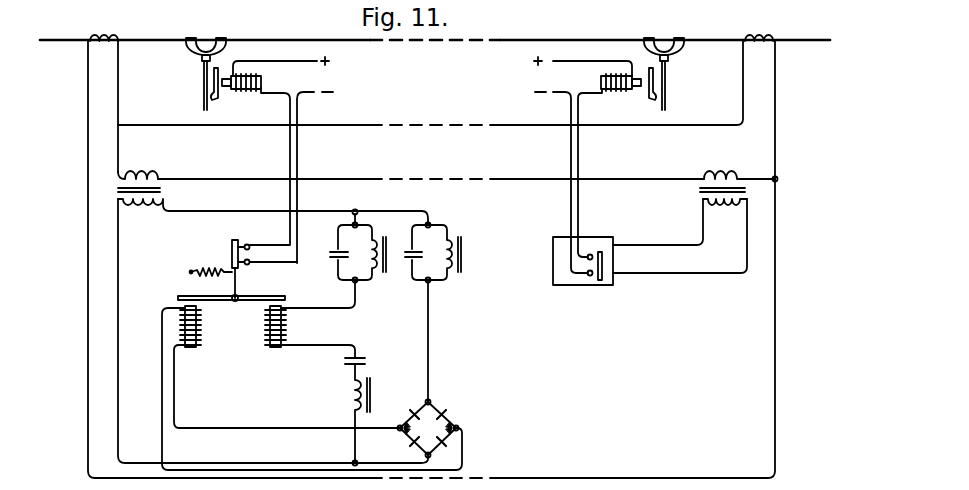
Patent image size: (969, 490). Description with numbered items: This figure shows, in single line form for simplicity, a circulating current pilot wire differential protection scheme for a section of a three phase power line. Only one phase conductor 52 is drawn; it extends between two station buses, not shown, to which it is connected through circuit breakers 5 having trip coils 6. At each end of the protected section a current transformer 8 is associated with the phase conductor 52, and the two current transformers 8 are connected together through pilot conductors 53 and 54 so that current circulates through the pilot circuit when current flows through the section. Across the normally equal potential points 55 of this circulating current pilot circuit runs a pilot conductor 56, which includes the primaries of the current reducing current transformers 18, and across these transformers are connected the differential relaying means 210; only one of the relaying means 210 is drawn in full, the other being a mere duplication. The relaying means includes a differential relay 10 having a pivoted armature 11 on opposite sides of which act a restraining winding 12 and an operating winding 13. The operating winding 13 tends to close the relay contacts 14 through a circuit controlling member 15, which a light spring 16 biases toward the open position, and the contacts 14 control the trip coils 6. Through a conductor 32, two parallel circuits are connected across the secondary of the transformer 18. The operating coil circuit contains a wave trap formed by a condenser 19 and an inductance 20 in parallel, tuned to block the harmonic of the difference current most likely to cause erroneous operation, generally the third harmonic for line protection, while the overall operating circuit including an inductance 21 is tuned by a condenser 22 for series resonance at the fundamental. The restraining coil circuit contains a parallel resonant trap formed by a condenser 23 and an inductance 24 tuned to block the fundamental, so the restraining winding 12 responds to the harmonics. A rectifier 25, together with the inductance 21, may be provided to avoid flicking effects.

The circuit breaker 5 is at (204, 68).
The trip coil 6 is at (243, 90).
The current transformer 8 is at (106, 33).
The differential relay 10 is at (240, 333).
The pivoted armature 11 is at (256, 297).
The restraining winding 12 is at (192, 345).
The operating winding 13 is at (287, 322).
The relay contacts 14 is at (249, 246).
The circuit controlling member 15 is at (232, 250).
The light spring 16 is at (201, 274).
The current reducing current transformer 18 is at (165, 190).
The condenser 19 is at (331, 253).
The inductance 20 is at (362, 246).
The inductance 21 is at (348, 397).
The condenser 22 is at (367, 361).
The condenser 23 is at (406, 258).
The inductance 24 is at (436, 313).
The rectifier 25 is at (428, 429).
The conductor 32 is at (178, 214).
The phase conductor 52 is at (542, 39).
The pilot conductor 53 is at (346, 125).
The pilot conductor 54 is at (547, 476).
The normally equal potential point 55 is at (120, 124).
The pilot conductor 56 is at (332, 178).
The differential relaying means 210 is at (158, 285).